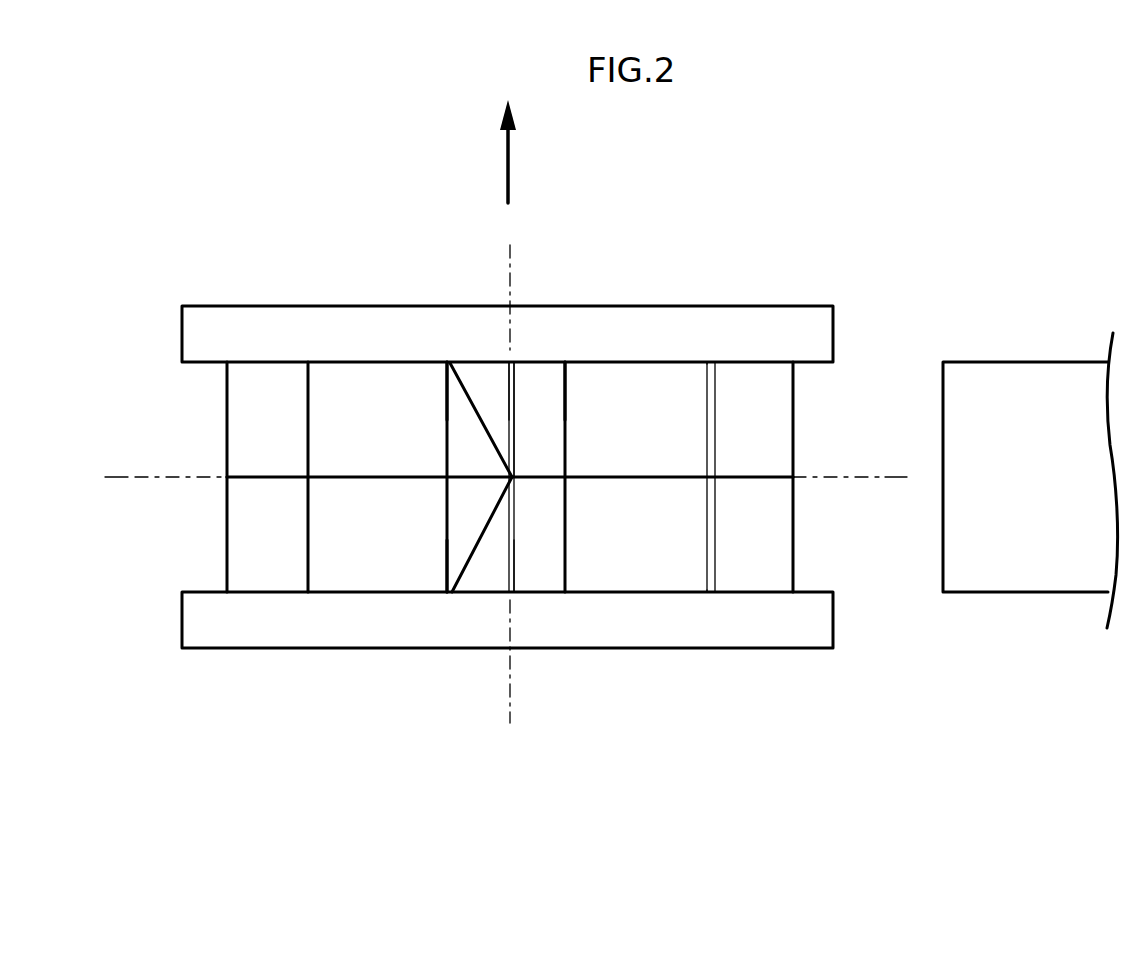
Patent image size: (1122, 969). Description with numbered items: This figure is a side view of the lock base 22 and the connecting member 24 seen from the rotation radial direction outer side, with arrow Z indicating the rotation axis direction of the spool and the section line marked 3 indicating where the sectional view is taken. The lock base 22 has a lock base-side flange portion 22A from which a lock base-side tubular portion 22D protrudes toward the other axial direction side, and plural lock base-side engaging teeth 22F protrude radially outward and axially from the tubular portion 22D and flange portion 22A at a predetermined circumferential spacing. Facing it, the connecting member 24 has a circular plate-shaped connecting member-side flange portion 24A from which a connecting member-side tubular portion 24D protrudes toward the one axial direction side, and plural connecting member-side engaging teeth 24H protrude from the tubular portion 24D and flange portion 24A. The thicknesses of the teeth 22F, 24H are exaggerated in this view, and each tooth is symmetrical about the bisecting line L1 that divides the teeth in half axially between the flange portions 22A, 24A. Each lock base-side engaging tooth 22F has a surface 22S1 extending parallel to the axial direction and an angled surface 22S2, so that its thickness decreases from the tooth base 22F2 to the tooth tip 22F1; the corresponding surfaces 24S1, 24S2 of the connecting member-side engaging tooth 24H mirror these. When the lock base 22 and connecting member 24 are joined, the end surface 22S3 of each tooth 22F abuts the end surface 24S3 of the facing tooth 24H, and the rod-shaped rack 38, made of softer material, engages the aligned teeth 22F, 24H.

The lock base 22 is at (517, 332).
The lock base-side flange portion 22A is at (787, 306).
The lock base-side engaging teeth 22F is at (227, 412).
The tooth tip 22F1 is at (508, 403).
The tooth base 22F2 is at (493, 423).
The surface at other circumferential direction side of lock base-side engaging tooth 22S1 is at (528, 478).
The surface at one circumferential direction side of lock base-side engaging tooth 22S2 is at (427, 385).
The end surface at other axial direction side of lock base-side engaging tooth 22S3 is at (540, 393).
The lock base-side tubular portion 22D is at (622, 390).
The connecting member 24 is at (521, 616).
The connecting member-side flange portion 24A is at (790, 648).
The connecting member-side engaging teeth 24H is at (227, 543).
The surface at other circumferential direction side of connecting member-side engagi 24S1 is at (545, 553).
The surface at one circumferential direction side of connecting member-side engaging 24S2 is at (495, 572).
The end surface at one axial direction side of connecting member-side engaging tooth 24S3 is at (520, 477).
The connecting member-side tubular portion 24D is at (615, 560).
The rack 38 is at (990, 362).
The bisecting line L1 is at (168, 482).
The arrow Z is at (507, 162).
The section line for FIG. 3 is at (110, 457).